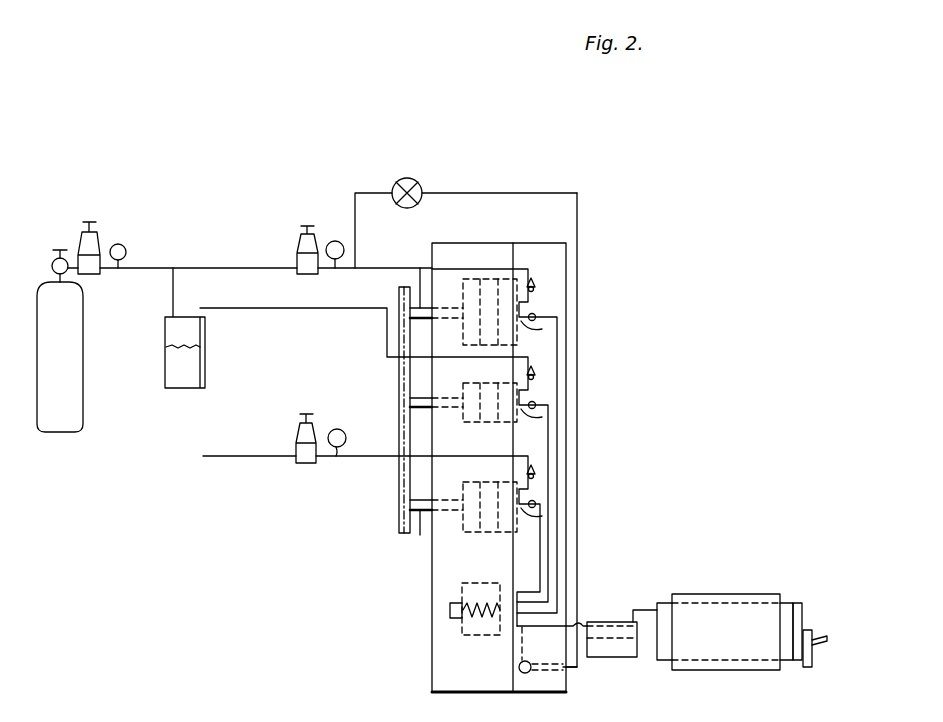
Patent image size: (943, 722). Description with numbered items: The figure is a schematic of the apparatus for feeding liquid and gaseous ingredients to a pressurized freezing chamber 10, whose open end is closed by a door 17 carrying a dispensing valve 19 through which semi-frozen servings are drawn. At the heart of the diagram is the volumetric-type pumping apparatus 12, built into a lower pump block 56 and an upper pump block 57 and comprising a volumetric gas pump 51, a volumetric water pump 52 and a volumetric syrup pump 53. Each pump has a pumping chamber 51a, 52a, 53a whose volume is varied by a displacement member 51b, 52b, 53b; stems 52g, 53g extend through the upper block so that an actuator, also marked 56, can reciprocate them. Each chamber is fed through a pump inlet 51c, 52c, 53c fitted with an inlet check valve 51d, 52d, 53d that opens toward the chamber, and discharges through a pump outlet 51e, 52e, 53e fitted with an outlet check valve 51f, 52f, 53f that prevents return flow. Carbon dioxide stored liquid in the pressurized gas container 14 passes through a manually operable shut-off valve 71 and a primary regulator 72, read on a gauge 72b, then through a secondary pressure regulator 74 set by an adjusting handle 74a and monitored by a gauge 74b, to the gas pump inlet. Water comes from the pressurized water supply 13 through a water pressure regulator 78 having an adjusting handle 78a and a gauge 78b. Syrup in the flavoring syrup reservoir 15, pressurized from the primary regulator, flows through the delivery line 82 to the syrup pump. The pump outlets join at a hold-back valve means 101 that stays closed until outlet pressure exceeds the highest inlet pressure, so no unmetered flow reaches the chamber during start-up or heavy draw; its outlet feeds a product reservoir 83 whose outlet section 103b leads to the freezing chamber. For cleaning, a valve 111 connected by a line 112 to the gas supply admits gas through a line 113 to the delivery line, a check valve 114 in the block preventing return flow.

The freezing chamber 10 is at (793, 603).
The volumetric-type pumping apparatus 12 is at (430, 652).
The water supply 13 is at (215, 456).
The pressurized gas container 14 is at (65, 366).
The flavoring syrup reservoir 15 is at (165, 372).
The door 17 is at (802, 612).
The dispensing valve 19 is at (812, 663).
The volumetric gas pump 51 is at (470, 275).
The pumping chamber 51a is at (507, 278).
The displacement member 51b is at (487, 280).
The pump inlet 51c is at (530, 322).
The inlet check valve 51d is at (525, 300).
The pump outlet 51e is at (533, 300).
The outlet check valve 51f is at (535, 280).
The volumetric water pump 52 is at (490, 540).
The pumping chamber 52a is at (500, 480).
The displacement member 52b is at (445, 500).
The pump inlet 52c is at (530, 506).
The inlet check valve 52d is at (525, 510).
The pump outlet 52e is at (533, 494).
The outlet check valve 52f is at (535, 468).
The stem 52g is at (420, 520).
The volumetric syrup pump 53 is at (482, 430).
The pumping chamber 53a is at (500, 385).
The displacement member 53b is at (440, 398).
The pump inlet 53c is at (528, 408).
The inlet check valve 53d is at (524, 408).
The pump outlet 53e is at (533, 392).
The outlet check valve 53f is at (535, 368).
The stem 53g is at (410, 404).
The pump block 56 is at (398, 300).
The upper pump block 57 is at (455, 684).
The manually operable shut-off valve 71 is at (54, 262).
The primary regulator 72 is at (94, 262).
The gauge 72b is at (126, 251).
The secondary pressure regulator 74 is at (298, 262).
The adjusting handle 74a is at (306, 230).
The gauge 74b is at (335, 240).
The water pressure regulator 78 is at (298, 464).
The adjusting handle 78a is at (302, 414).
The gauge 78b is at (338, 450).
The delivery line 82 is at (234, 308).
The product reservoir 83 is at (612, 657).
The hold-back valve means 101 is at (462, 629).
The outlet section 103b is at (645, 610).
The valve 111 is at (410, 178).
The line 112 is at (370, 191).
The line 113 is at (440, 192).
The check valve 114 is at (524, 680).